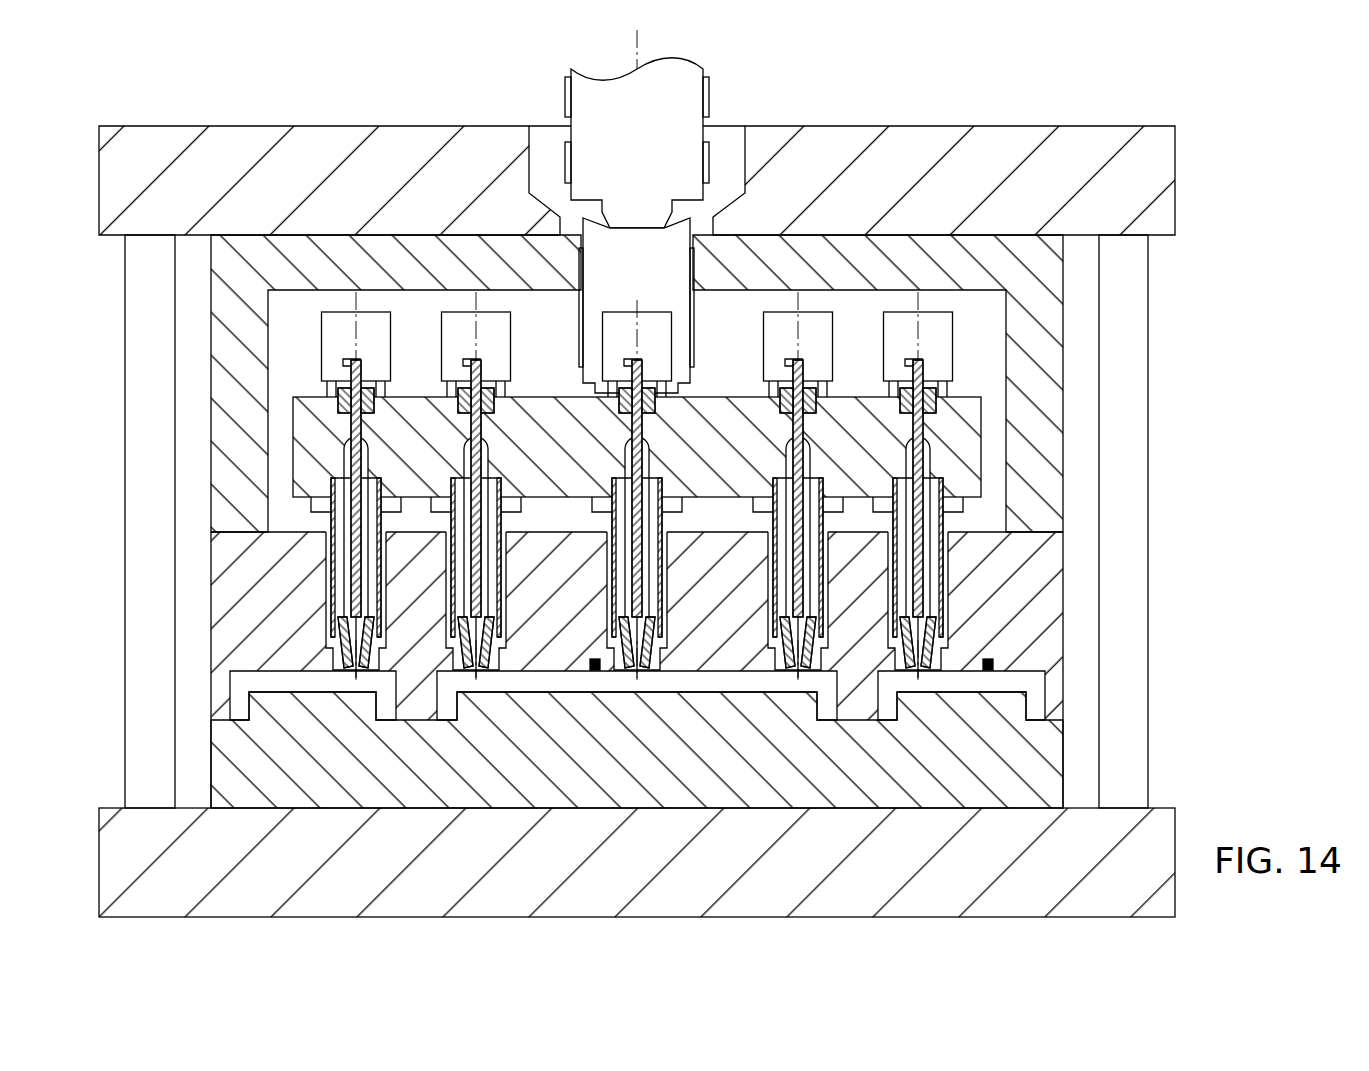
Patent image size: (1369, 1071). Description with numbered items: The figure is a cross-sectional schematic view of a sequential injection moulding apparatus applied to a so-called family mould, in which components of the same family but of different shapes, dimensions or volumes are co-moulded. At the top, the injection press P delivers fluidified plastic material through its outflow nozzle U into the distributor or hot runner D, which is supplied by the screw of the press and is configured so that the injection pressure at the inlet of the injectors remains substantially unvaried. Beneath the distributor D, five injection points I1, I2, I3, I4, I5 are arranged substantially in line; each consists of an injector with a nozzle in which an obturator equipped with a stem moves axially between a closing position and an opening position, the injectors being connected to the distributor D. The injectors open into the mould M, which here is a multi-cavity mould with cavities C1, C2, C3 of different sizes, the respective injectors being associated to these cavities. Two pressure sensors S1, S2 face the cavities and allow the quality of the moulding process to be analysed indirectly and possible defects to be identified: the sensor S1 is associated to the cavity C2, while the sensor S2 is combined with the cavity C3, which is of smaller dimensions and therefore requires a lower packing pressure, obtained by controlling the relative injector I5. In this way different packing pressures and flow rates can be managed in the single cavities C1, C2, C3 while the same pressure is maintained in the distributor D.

The injection press P is at (687, 107).
The outflow nozzle of the press U is at (648, 220).
The distributor D is at (961, 410).
The mould M is at (207, 692).
The injection point I1 is at (331, 522).
The injection point I2 is at (507, 603).
The injection point I3 is at (668, 593).
The injection point I4 is at (829, 596).
The injection point I5 is at (945, 604).
The cavity C1 is at (318, 683).
The cavity C2 is at (731, 681).
The cavity C3 is at (999, 681).
The pressure sensor S1 is at (598, 672).
The pressure sensor S2 is at (992, 660).